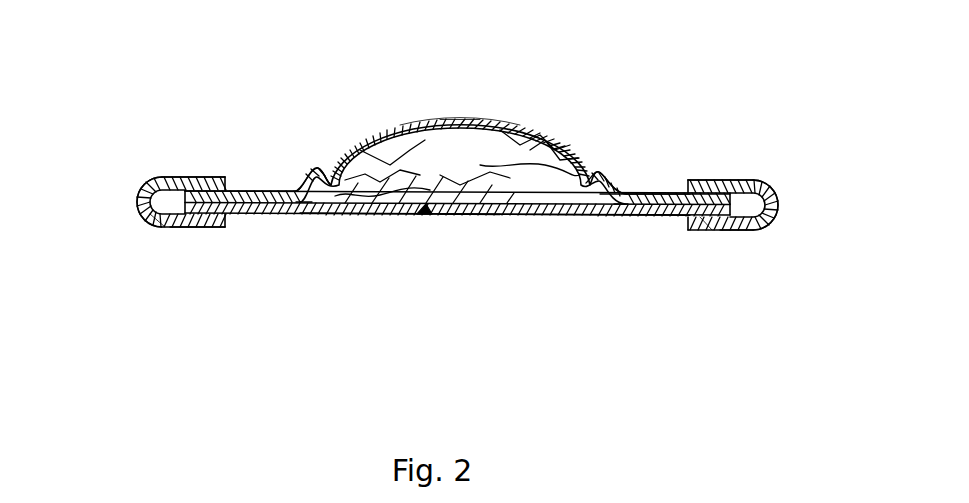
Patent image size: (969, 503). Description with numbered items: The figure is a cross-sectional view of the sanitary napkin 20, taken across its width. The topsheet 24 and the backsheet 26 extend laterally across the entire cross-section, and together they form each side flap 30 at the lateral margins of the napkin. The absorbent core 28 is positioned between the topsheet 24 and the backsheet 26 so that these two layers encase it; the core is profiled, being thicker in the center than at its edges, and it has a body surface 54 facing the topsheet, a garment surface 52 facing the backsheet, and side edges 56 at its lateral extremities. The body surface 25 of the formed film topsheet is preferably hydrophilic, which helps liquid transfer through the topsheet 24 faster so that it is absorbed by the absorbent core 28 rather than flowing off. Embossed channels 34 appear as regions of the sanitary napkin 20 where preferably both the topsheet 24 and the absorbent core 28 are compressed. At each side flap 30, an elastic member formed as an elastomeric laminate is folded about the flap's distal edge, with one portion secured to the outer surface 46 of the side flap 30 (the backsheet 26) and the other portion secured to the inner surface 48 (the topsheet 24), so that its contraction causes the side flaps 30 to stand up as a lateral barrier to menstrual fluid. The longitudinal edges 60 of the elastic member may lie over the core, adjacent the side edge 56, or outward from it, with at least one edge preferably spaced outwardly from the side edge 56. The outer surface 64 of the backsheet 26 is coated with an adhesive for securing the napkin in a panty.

The sanitary napkin 20 is at (349, 72).
The topsheet 24 is at (430, 122).
The body surface 25 is at (455, 120).
The backsheet 26 is at (413, 208).
The absorbent core 28 is at (457, 166).
The side flap 30 is at (283, 190).
The embossed channels 34 is at (318, 168).
The outer surface 46 is at (655, 216).
The inner surface 48 is at (630, 192).
The garment surface 52 is at (427, 208).
The body surface 54 is at (389, 129).
The side edge 56 is at (303, 207).
The longitudinal edge 60 is at (230, 191).
The outer surface 64 is at (467, 215).